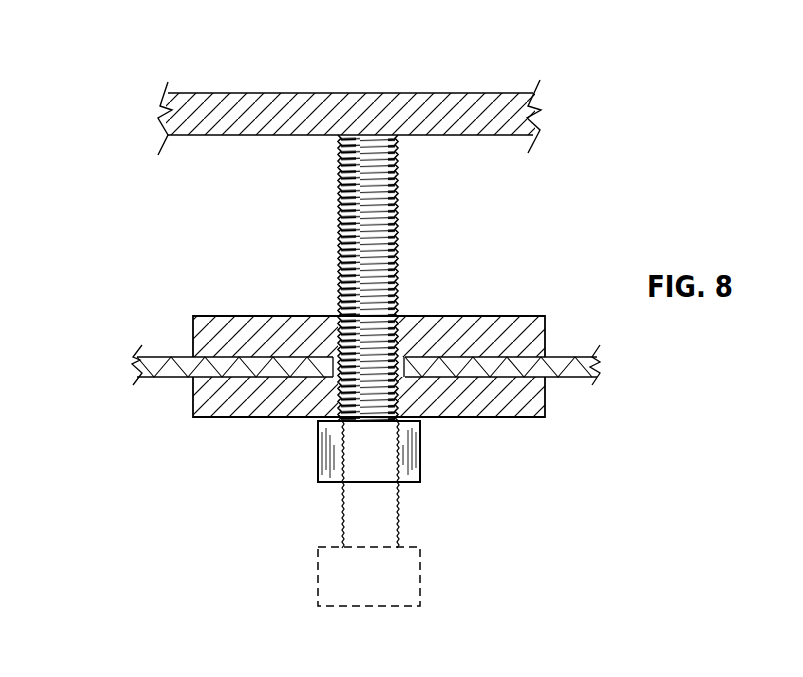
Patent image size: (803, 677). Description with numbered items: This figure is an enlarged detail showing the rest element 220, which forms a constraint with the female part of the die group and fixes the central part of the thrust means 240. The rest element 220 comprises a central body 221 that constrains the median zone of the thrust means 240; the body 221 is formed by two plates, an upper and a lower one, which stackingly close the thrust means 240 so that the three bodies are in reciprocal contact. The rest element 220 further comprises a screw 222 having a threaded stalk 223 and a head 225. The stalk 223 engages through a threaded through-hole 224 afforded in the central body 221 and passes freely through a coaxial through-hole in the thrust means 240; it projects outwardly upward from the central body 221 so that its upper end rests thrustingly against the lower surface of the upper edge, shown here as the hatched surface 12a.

The mounting surface 12a is at (229, 100).
The stalk 223 is at (398, 238).
The central body 221 is at (521, 316).
The thrust means 240 is at (162, 377).
The rest element 220 is at (327, 434).
The screw 222 is at (421, 452).
The threaded through-hole 224 is at (350, 422).
The head 225 is at (333, 483).